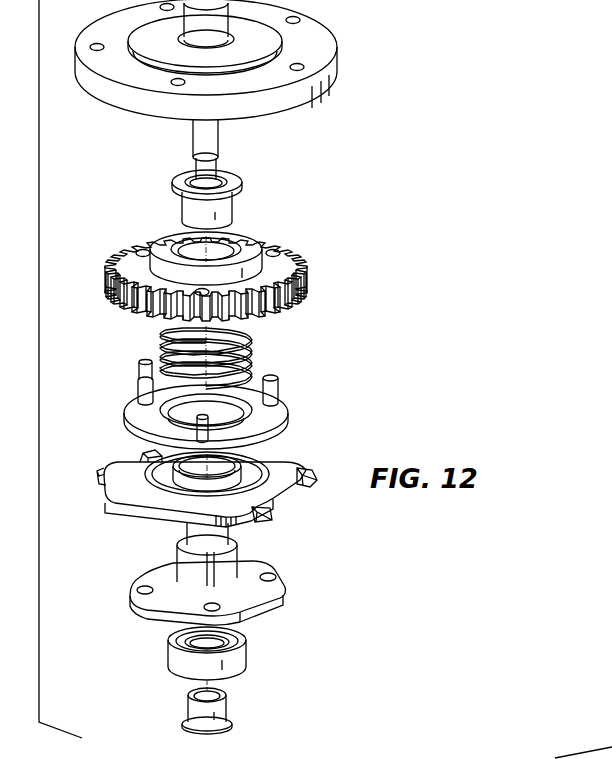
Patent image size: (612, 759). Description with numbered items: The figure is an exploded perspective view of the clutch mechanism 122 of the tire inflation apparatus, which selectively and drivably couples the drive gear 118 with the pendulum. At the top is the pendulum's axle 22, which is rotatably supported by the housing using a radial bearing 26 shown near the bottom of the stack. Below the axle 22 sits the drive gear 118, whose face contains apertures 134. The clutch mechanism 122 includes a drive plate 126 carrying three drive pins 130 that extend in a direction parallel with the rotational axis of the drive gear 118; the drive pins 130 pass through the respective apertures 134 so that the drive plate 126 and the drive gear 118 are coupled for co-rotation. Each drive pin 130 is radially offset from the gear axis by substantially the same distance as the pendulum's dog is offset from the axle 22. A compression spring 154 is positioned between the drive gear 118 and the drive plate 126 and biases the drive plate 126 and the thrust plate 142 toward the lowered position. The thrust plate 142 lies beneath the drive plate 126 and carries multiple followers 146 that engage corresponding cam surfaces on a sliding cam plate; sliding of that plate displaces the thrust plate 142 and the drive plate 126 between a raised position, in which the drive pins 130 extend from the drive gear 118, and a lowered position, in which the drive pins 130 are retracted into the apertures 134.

The axle 22 is at (210, 134).
The radial bearing 26 is at (240, 660).
The drive gear 118 is at (308, 289).
The clutch mechanism 122 is at (357, 380).
The drive plate 126 is at (275, 420).
The drive pins 130 is at (270, 380).
The apertures 134 is at (144, 246).
The thrust plate 142 is at (137, 500).
The followers 146 is at (97, 478).
The compression spring 154 is at (160, 343).